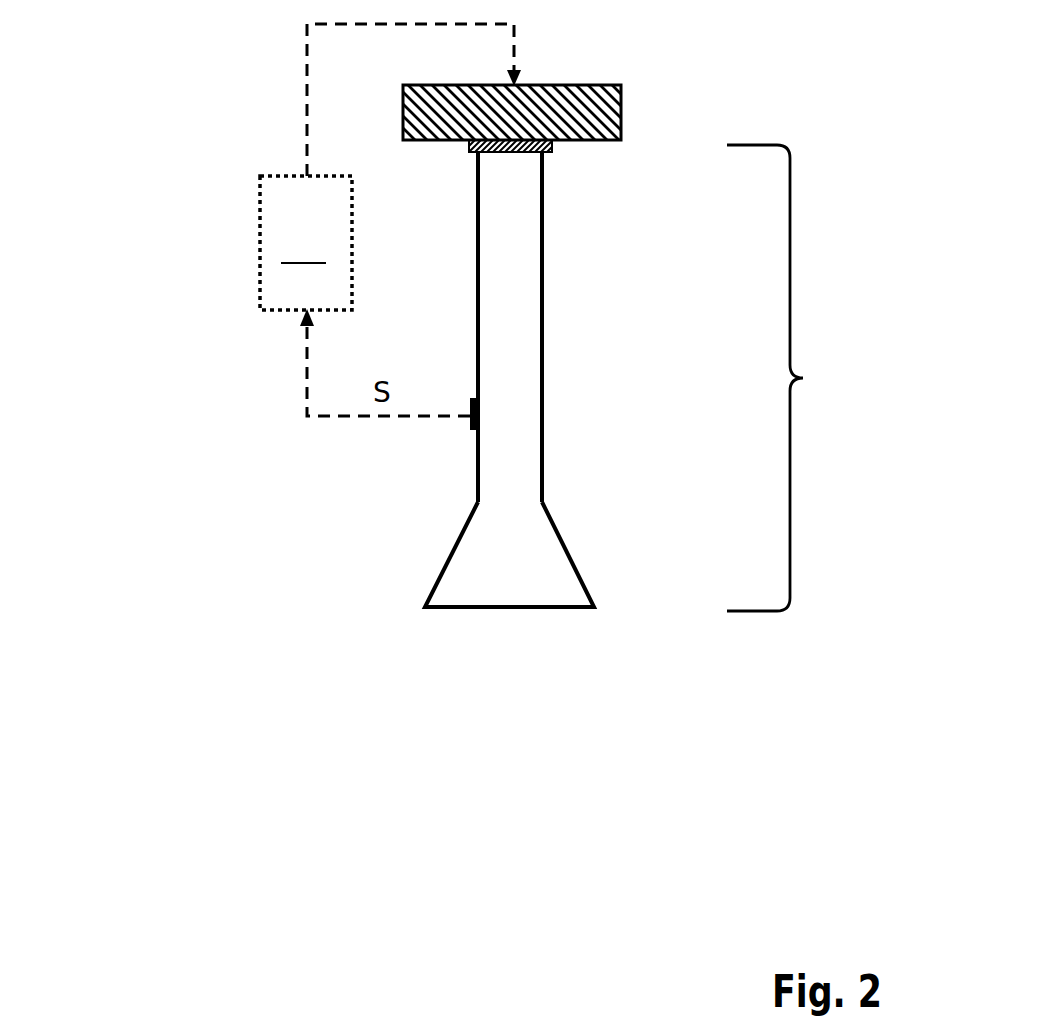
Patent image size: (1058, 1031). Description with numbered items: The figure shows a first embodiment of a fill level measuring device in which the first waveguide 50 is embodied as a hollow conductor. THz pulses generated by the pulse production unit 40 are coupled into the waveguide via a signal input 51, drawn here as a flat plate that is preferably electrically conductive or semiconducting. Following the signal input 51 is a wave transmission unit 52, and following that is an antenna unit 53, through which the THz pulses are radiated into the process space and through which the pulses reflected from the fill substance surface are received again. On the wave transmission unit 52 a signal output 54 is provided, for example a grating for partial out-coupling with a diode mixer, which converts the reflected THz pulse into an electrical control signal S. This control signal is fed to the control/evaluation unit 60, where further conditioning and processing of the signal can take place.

The pulse production unit 40 is at (621, 125).
The first waveguide 50 is at (803, 378).
The signal input 51 is at (553, 150).
The wave transmission unit 52 is at (542, 377).
The antenna unit 53 is at (572, 557).
The signal output 54 is at (470, 418).
The control/evaluation unit 60 is at (260, 248).